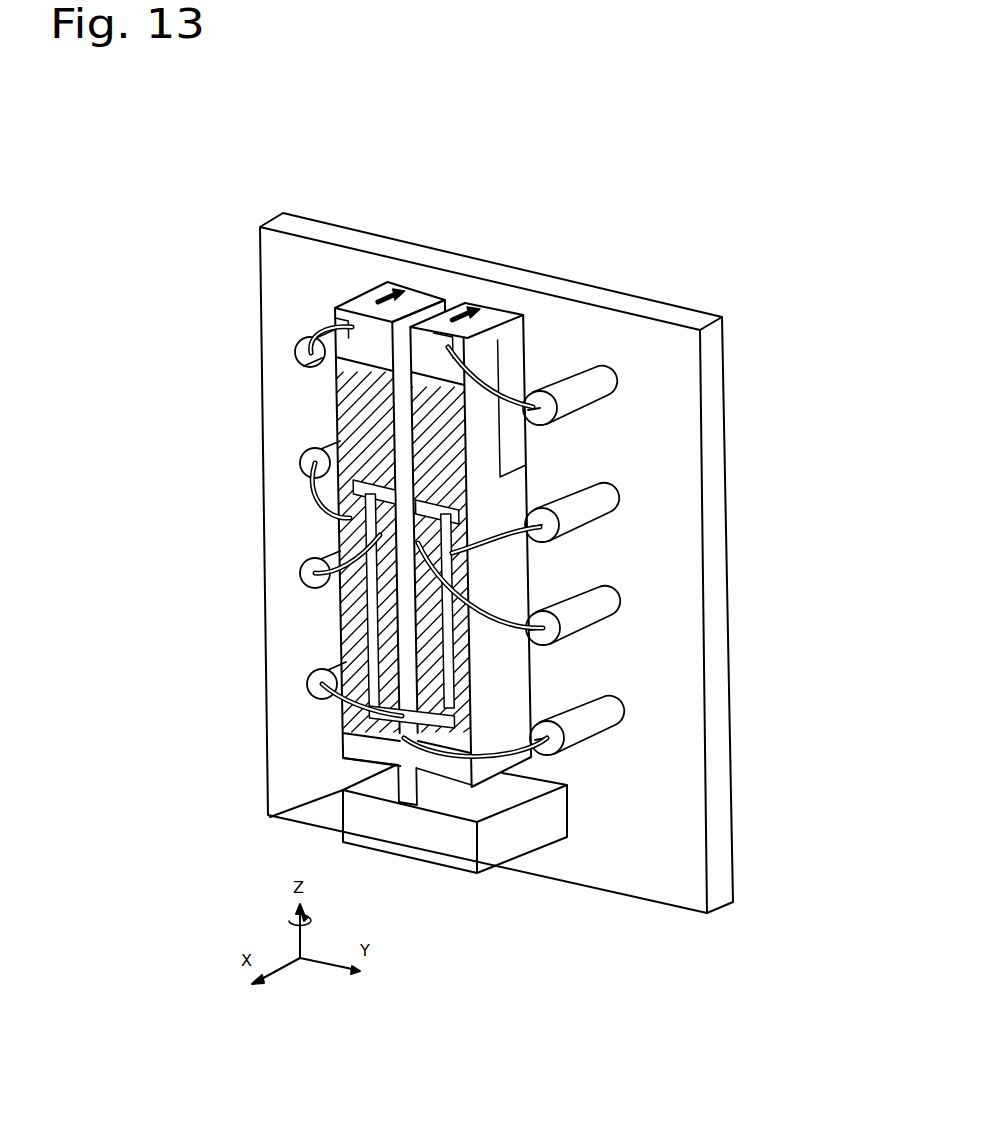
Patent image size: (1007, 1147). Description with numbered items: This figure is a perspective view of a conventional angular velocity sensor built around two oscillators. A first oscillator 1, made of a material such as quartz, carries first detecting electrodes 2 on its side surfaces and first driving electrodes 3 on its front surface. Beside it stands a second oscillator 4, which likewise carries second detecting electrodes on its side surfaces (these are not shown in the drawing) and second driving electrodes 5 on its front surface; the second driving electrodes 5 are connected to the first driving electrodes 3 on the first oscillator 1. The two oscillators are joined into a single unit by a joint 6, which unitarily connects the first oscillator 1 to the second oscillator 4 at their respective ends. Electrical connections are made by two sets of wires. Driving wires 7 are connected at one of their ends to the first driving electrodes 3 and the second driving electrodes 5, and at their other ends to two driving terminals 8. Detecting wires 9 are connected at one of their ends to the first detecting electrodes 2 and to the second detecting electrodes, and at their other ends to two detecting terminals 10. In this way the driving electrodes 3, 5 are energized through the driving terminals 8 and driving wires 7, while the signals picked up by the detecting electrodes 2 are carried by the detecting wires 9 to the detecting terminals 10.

The first oscillator 1 is at (505, 312).
The first detecting electrodes 2 is at (500, 442).
The first driving electrodes 3 is at (465, 705).
The second oscillator 4 is at (423, 293).
The second driving electrodes 5 is at (375, 657).
The joint 6 is at (348, 752).
The driving wires 7 is at (503, 768).
The driving terminals 8 is at (580, 731).
The detecting wires 9 is at (514, 365).
The detecting terminals 10 is at (600, 400).